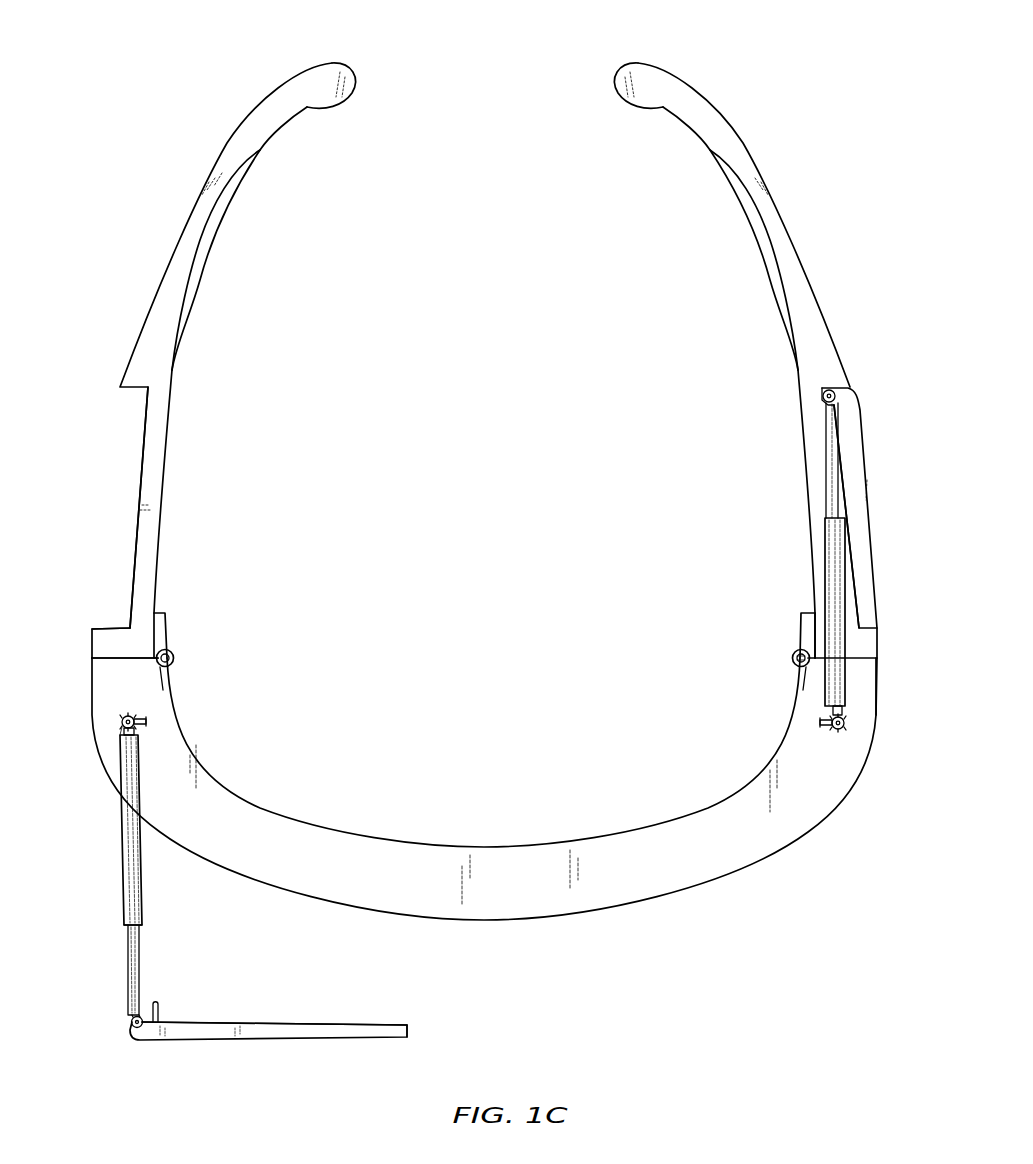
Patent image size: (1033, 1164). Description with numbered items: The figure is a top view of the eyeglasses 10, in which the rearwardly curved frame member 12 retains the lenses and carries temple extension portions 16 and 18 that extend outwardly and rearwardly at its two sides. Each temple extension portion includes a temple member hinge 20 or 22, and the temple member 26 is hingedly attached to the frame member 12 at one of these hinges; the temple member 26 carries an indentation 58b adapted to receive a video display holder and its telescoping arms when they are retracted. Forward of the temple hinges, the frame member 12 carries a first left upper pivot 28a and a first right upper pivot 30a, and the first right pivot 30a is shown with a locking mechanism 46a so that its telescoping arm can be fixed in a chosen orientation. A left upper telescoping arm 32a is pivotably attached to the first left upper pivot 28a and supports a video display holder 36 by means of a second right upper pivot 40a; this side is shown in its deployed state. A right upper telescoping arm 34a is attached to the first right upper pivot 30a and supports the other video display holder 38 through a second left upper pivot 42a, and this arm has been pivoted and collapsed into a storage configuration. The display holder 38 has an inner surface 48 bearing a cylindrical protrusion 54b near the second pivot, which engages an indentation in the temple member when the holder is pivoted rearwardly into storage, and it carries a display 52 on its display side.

The eyeglasses 10 is at (479, 119).
The frame member 12 is at (522, 891).
The temple extension portion 16 is at (860, 681).
The temple extension portion 18 is at (143, 683).
The temple member hinge 20 is at (795, 653).
The temple member hinge 22 is at (176, 651).
The temple member 26 is at (258, 148).
The first left upper pivot 28a is at (712, 148).
The first right upper pivot 30a is at (122, 723).
The left upper telescoping arm 32a is at (824, 556).
The right upper telescoping arm 34a is at (121, 902).
The video display holder 36 is at (850, 519).
The video display holder 38 is at (340, 1024).
The second right upper pivot 40a is at (821, 389).
The second left upper pivot 42a is at (131, 1018).
The locking mechanism 46a is at (127, 713).
The inner surface 48 is at (257, 1022).
The display 52 is at (370, 1025).
The cylindrical protrusion 54b is at (158, 1005).
The indentation 58b is at (133, 557).